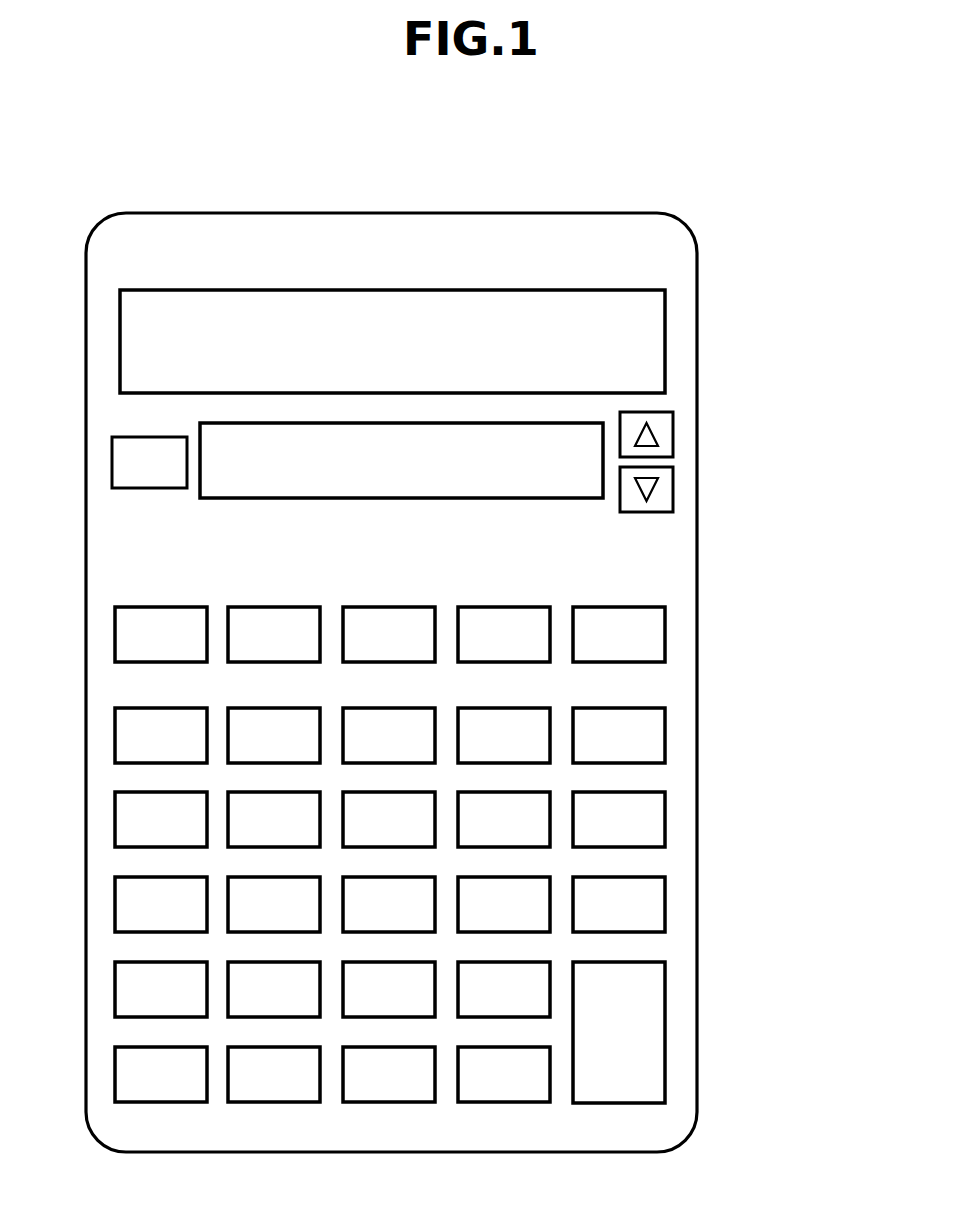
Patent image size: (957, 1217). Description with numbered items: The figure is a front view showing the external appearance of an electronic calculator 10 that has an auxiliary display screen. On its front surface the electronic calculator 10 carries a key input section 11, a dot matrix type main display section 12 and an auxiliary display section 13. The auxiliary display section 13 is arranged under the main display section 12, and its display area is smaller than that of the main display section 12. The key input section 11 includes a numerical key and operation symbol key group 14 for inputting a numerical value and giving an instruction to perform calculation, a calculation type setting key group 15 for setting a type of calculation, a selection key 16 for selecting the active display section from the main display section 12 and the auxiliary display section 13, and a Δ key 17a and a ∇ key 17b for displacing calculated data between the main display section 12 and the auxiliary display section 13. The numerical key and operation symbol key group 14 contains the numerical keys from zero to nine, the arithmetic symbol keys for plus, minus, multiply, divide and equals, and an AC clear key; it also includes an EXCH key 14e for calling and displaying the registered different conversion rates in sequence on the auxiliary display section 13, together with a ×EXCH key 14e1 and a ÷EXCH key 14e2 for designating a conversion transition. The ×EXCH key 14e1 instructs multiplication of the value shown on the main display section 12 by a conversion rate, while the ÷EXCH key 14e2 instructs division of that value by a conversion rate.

The electronic calculator 10 is at (542, 186).
The key input section 11 is at (480, 764).
The main display section 12 is at (665, 327).
The auxiliary display section 13 is at (587, 423).
The numerical key and operation symbol key group 14 is at (439, 898).
The EXCH key 14e is at (373, 706).
The ×EXCH key 14e1 is at (145, 706).
The ÷EXCH key 14e2 is at (258, 706).
The calculation type setting key group 15 is at (705, 595).
The selection key 16 is at (150, 488).
The Δ key 17a is at (673, 435).
The ∇ key 17b is at (673, 490).